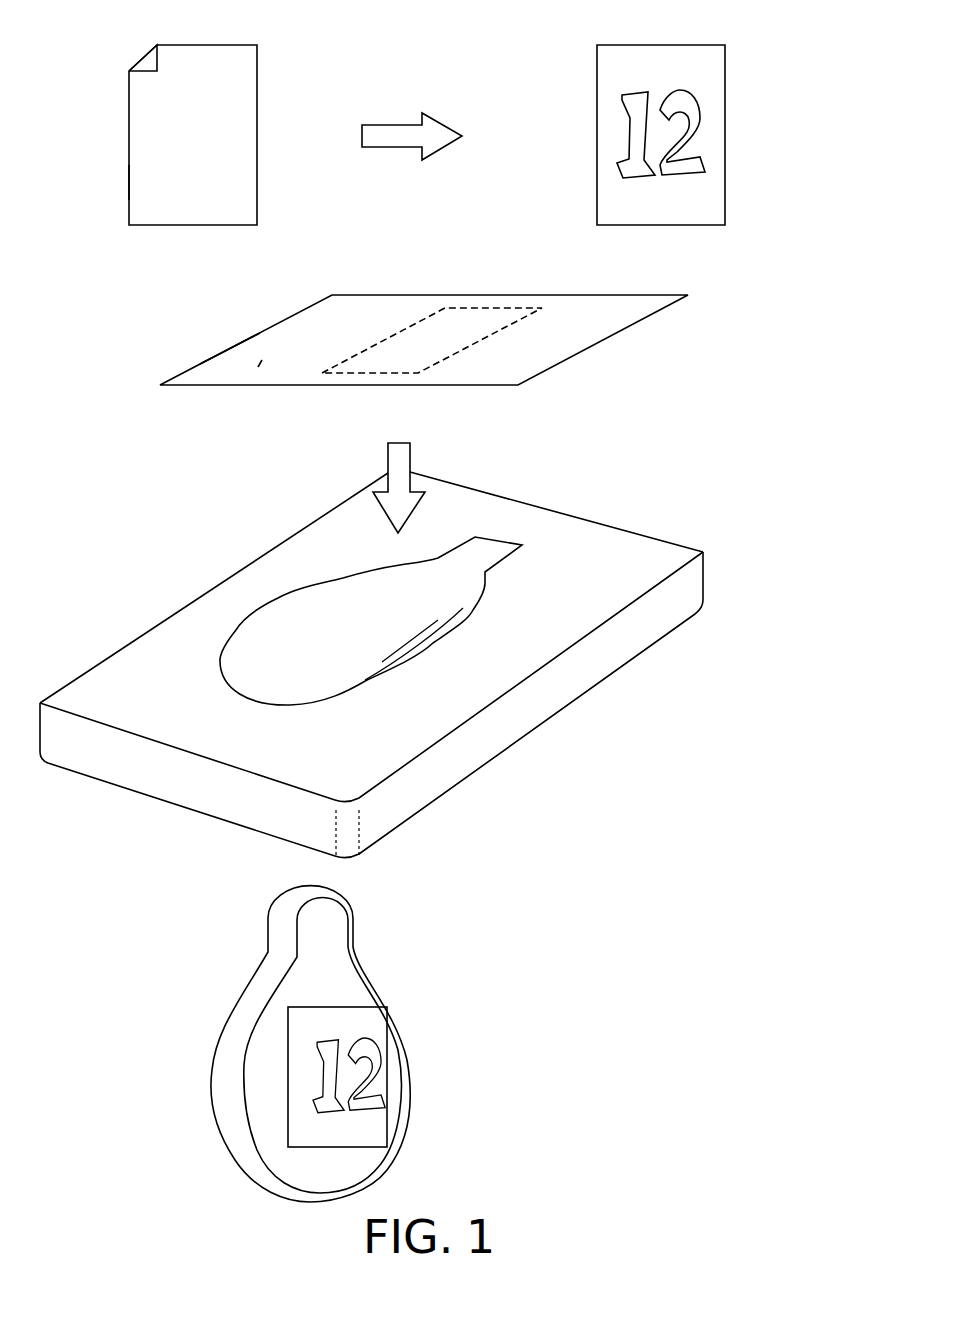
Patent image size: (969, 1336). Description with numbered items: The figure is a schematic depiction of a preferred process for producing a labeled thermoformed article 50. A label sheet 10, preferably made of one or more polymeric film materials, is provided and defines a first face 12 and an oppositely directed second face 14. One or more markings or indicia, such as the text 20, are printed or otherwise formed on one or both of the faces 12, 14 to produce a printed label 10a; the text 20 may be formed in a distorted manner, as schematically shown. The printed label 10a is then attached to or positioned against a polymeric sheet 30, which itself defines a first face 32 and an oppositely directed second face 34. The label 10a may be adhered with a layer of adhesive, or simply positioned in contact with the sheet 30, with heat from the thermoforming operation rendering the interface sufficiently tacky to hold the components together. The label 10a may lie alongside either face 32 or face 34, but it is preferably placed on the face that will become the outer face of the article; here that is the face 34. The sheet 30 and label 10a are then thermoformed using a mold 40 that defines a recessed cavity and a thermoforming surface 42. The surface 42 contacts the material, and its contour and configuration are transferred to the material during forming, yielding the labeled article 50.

The label sheet 10 is at (160, 133).
The first face 12 is at (152, 176).
The second face 14 is at (147, 62).
The printed label 10a is at (705, 63).
The text 20 is at (695, 110).
The polymeric sheet 30 is at (268, 345).
The first face 32 is at (227, 357).
The second face 34 is at (258, 367).
The mold 40 is at (117, 673).
The thermoforming surface 42 is at (285, 627).
The labeled thermoformed article 50 is at (420, 938).